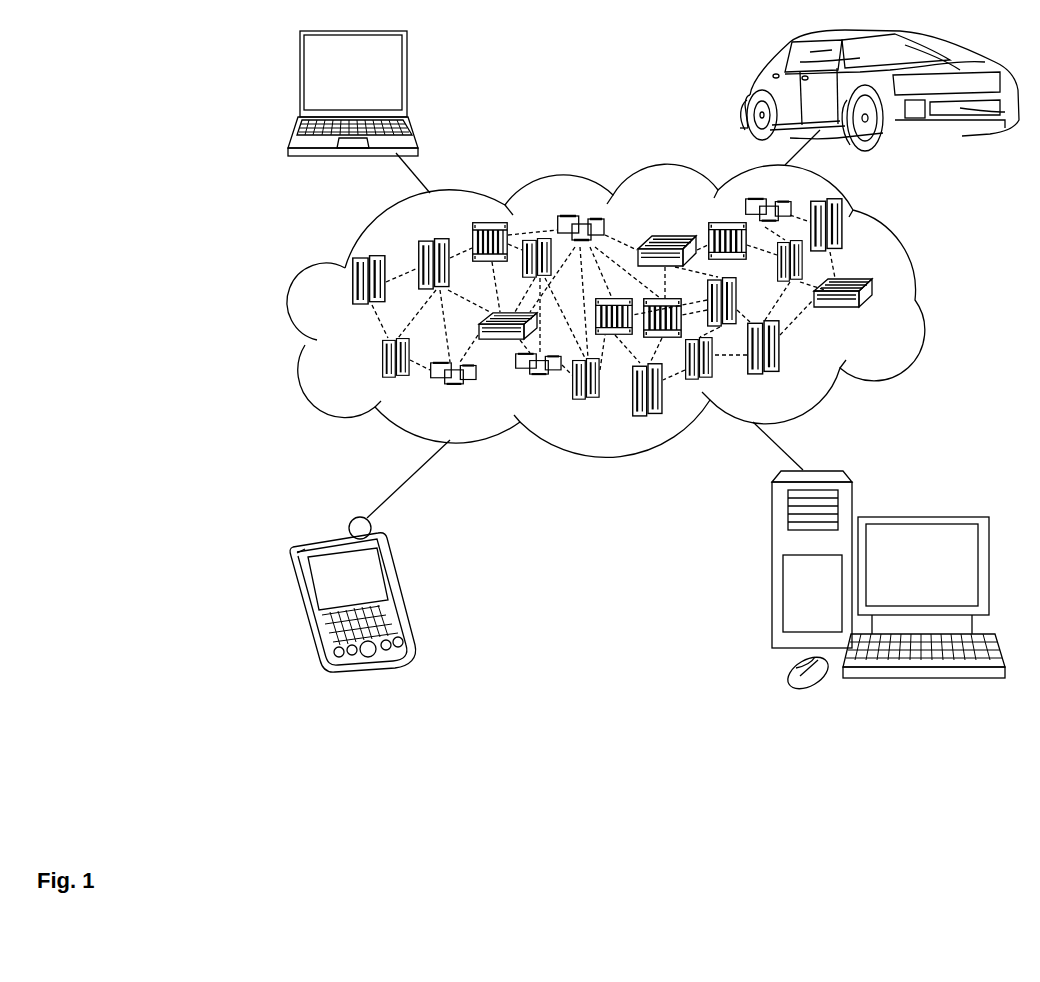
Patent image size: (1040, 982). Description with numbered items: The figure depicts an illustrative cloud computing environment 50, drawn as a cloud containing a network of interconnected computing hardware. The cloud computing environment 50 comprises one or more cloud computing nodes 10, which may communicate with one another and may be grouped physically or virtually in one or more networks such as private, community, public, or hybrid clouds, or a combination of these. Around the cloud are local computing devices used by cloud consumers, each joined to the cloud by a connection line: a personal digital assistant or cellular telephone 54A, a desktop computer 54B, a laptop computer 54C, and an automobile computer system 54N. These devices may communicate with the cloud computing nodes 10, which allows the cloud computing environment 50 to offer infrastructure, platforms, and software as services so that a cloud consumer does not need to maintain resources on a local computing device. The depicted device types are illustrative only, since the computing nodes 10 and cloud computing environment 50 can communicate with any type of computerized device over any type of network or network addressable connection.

The cloud computing nodes 10 is at (880, 315).
The cloud computing environment 50 is at (917, 297).
The personal digital assistant (PDA) or cellular telephone 54A is at (395, 585).
The desktop computer 54B is at (919, 516).
The laptop computer 54C is at (407, 80).
The automobile computer system 54N is at (752, 94).